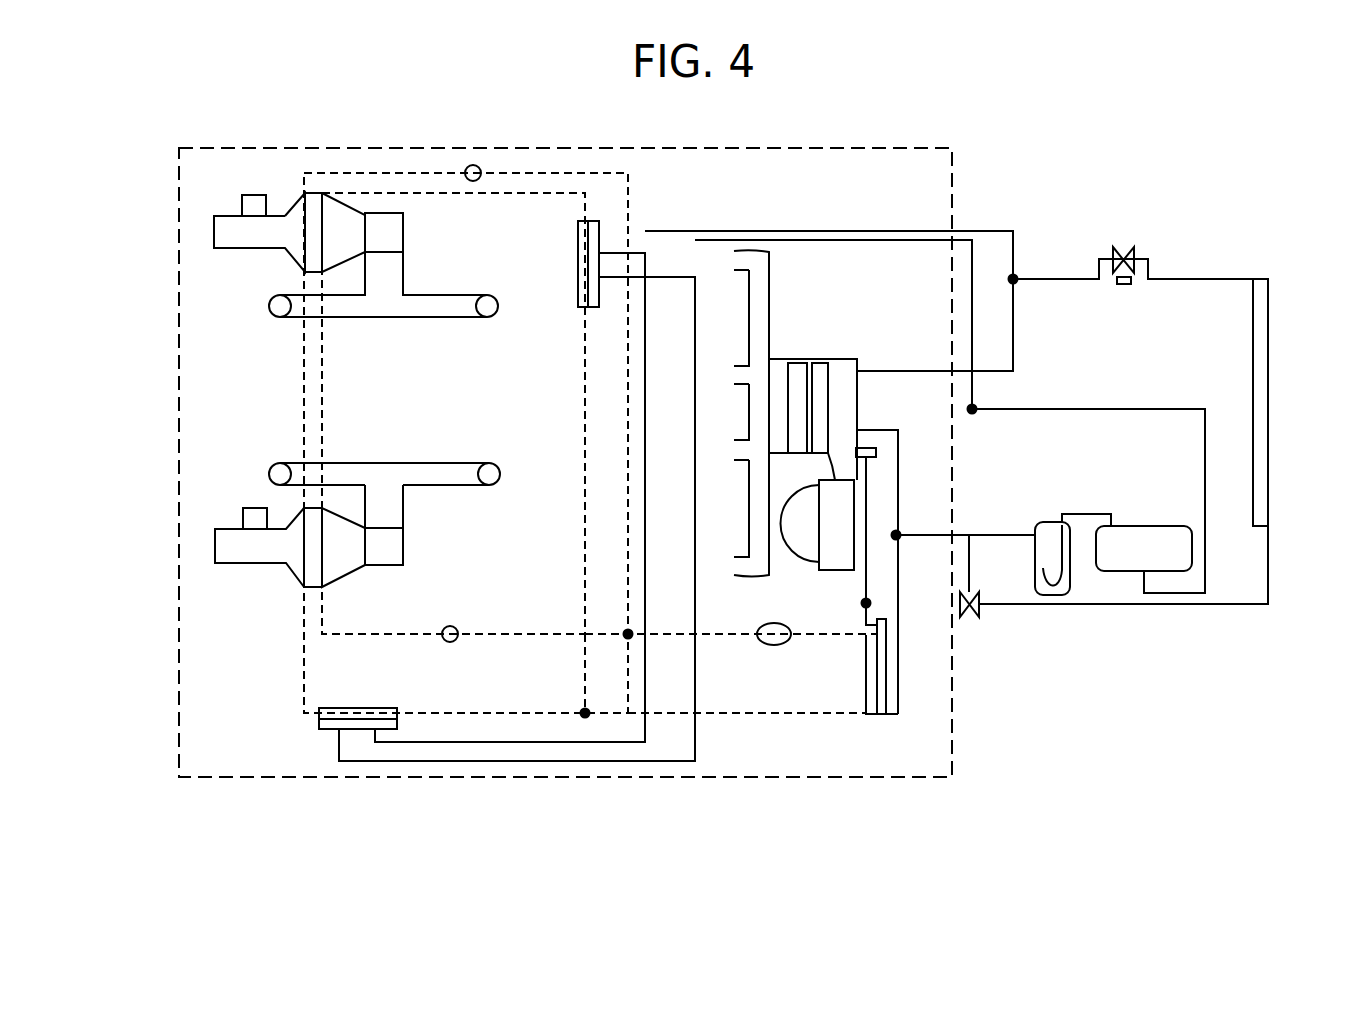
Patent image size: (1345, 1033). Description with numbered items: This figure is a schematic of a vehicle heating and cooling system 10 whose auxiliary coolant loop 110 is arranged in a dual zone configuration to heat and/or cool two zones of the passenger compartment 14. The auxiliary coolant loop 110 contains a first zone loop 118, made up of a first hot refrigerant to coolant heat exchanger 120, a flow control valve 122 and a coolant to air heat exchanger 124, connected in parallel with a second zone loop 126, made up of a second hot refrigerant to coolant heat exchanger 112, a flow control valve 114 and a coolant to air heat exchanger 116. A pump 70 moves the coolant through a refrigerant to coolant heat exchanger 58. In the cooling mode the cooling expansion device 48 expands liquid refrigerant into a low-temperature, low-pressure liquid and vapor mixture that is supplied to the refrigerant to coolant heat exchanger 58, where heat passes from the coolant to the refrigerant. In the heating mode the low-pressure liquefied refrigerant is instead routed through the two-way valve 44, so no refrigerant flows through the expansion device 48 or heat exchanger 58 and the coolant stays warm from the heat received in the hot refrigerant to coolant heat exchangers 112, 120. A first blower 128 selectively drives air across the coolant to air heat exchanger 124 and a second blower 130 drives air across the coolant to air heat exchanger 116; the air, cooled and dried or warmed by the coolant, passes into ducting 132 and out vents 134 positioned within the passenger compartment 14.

The vehicle heating and cooling system 10 is at (1240, 255).
The passenger compartment 14 is at (178, 328).
The two-way valve 44 is at (979, 617).
The cooling expansion device 48 is at (886, 625).
The refrigerant to coolant heat exchanger 58 is at (866, 714).
The pump 70 is at (774, 646).
The auxiliary coolant loop 110 is at (750, 713).
The second hot refrigerant to coolant heat exchanger 112 is at (578, 302).
The flow control valve 114 is at (473, 165).
The coolant to air heat exchanger 116 is at (303, 263).
The first zone loop 118 is at (525, 634).
The first hot refrigerant to coolant heat exchanger 120 is at (368, 708).
The flow control valve 122 is at (449, 626).
The coolant to air heat exchanger 124 is at (303, 574).
The second zone loop 126 is at (585, 393).
The first blower 128 is at (252, 508).
The second blower 130 is at (252, 195).
The ducting 132 is at (320, 318).
The vents 134 is at (490, 296).